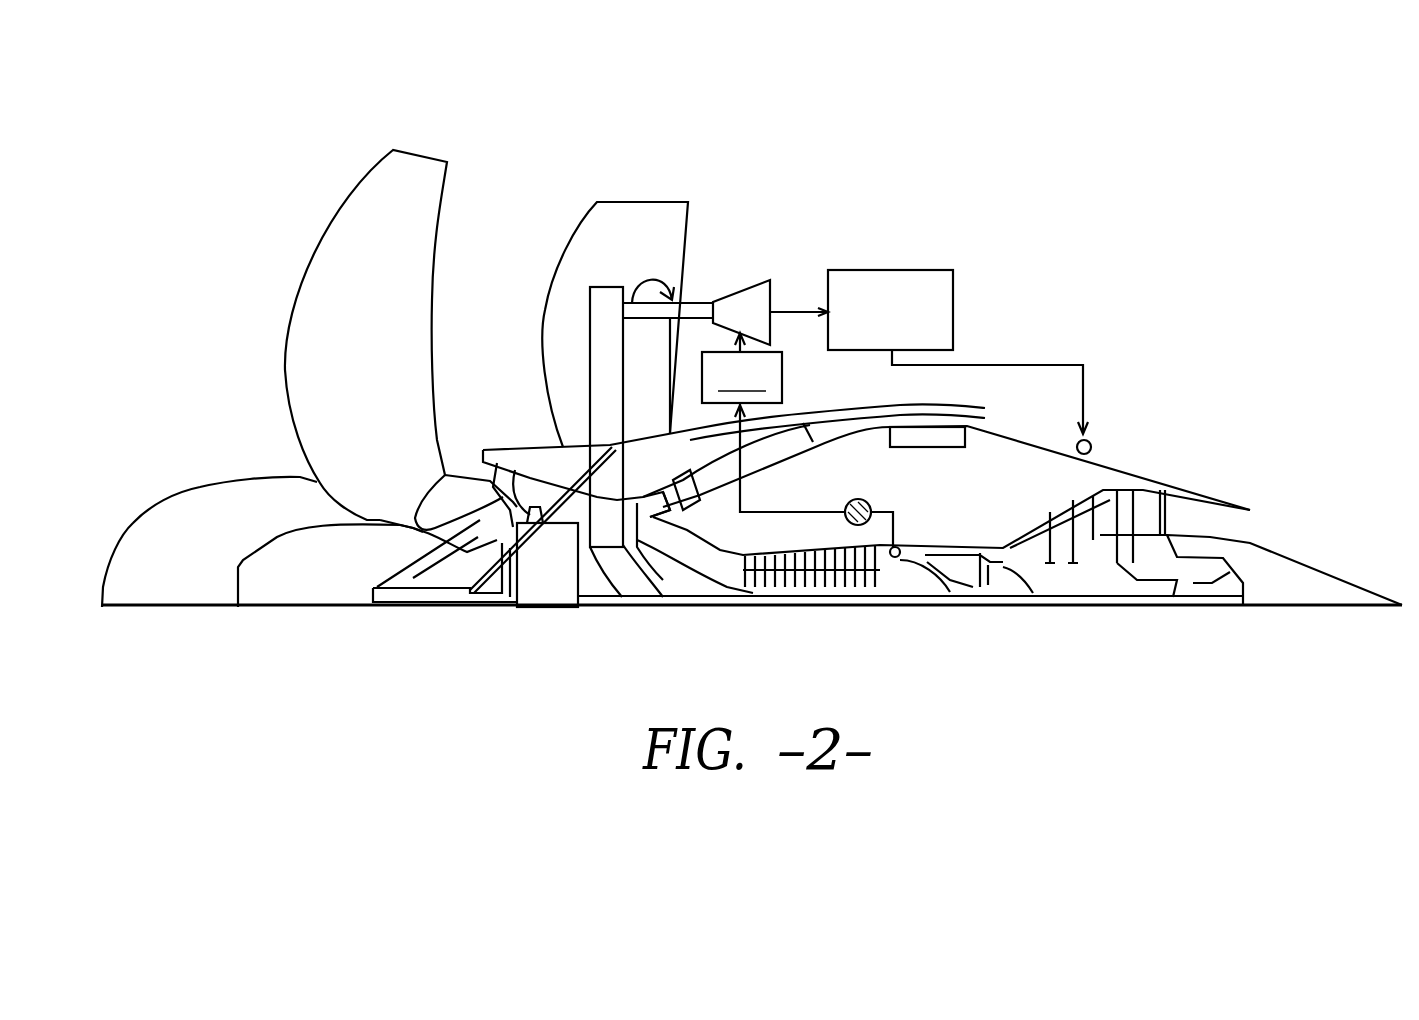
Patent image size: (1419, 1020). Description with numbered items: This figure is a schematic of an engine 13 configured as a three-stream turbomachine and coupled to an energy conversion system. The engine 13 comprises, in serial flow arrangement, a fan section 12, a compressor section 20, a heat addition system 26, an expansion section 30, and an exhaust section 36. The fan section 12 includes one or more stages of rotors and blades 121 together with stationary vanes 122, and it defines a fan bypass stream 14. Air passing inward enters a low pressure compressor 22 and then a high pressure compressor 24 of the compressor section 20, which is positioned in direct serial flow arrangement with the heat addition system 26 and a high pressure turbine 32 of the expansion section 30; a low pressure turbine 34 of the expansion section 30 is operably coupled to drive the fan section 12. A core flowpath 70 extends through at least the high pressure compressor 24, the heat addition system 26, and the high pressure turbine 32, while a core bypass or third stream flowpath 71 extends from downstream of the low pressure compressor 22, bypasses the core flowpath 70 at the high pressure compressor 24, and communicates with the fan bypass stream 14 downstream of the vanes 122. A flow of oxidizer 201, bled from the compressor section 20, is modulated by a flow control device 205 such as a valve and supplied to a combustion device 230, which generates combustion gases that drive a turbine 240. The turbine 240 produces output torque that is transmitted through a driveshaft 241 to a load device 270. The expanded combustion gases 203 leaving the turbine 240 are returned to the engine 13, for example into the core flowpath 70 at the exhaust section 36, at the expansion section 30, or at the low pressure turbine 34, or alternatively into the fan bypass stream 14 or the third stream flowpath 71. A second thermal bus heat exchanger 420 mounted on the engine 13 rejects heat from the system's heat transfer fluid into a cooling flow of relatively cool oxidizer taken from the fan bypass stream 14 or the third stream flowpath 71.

The fan section 12 is at (337, 173).
The blades 121 is at (413, 173).
The vanes 122 is at (637, 217).
The engine 13 is at (800, 193).
The fan bypass stream 14 is at (410, 352).
The load device 270 is at (920, 268).
The driveshaft 241 is at (693, 297).
The turbine 240 is at (750, 283).
The combustion device 230 is at (773, 422).
The expanded combustion gases 203 is at (1050, 365).
The second thermal bus heat exchanger 420 is at (942, 428).
The core flowpath 70 is at (482, 466).
The third stream flowpath 71 is at (637, 490).
The flow control device 205 is at (868, 498).
The flow of oxidizer 201 is at (903, 530).
The exhaust section 36 is at (1285, 535).
The low pressure compressor 22 is at (473, 543).
The compressor section 20 is at (632, 613).
The high pressure compressor 24 is at (753, 600).
The heat addition system 26 is at (928, 617).
The high pressure turbine 32 is at (1033, 608).
The low pressure turbine 34 is at (1088, 607).
The expansion section 30 is at (1133, 613).